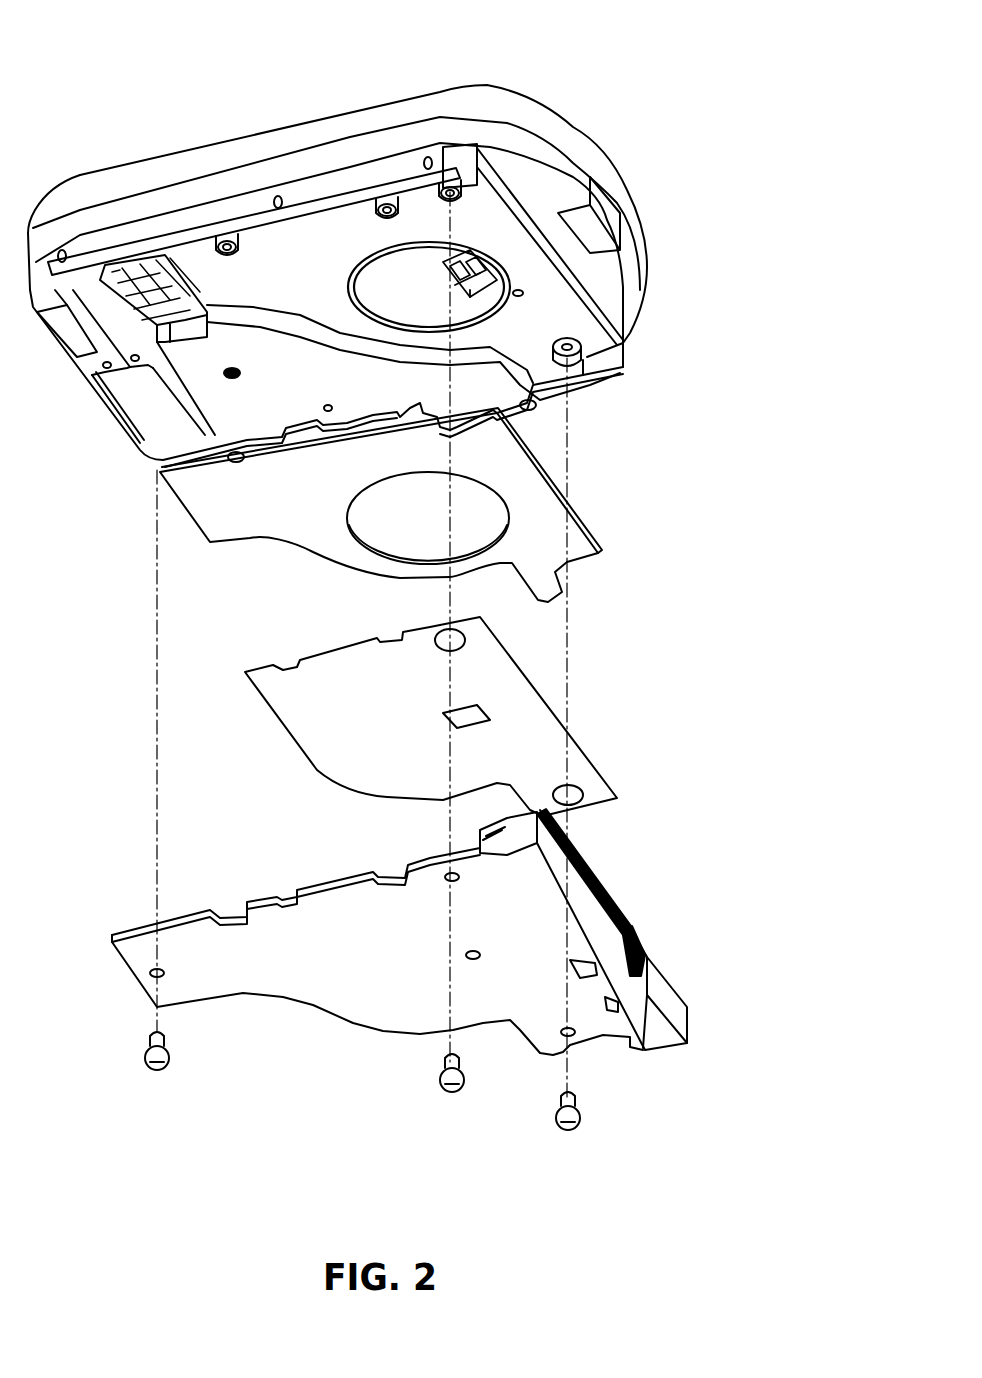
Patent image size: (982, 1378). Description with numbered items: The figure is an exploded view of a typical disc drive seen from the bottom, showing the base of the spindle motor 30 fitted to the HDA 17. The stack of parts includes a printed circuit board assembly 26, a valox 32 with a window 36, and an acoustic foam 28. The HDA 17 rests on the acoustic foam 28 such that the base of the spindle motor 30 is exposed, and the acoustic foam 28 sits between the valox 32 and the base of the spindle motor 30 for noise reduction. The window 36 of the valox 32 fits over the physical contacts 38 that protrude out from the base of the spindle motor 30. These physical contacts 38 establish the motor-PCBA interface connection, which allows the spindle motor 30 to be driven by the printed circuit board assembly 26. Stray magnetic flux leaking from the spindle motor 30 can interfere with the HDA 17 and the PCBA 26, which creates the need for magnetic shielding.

The HDA 17 is at (610, 190).
The printed circuit board assembly 26 is at (630, 918).
The acoustic foam 28 is at (590, 525).
The spindle motor 30 is at (383, 283).
The valox 32 is at (492, 688).
The window 36 is at (485, 705).
The physical contacts 38 is at (478, 258).